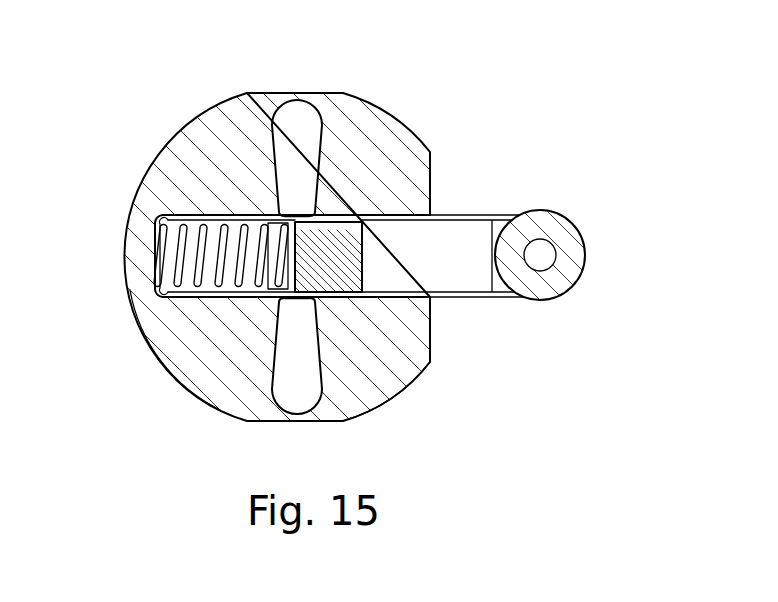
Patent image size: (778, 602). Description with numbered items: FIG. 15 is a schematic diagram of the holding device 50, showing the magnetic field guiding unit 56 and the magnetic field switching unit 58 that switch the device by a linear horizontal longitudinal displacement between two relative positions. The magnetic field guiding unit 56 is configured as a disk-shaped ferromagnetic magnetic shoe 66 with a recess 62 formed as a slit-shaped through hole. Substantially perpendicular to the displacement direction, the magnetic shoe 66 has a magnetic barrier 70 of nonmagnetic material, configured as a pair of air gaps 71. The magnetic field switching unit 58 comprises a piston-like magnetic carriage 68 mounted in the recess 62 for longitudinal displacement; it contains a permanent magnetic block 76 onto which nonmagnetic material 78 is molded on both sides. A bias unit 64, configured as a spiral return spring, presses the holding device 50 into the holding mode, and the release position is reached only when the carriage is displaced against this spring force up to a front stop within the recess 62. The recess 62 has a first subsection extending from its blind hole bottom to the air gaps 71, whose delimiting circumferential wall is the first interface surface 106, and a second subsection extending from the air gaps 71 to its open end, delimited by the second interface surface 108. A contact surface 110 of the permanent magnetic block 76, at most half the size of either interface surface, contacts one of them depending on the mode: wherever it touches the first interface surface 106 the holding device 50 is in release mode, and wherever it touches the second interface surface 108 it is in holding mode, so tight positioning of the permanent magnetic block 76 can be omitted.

The holding device 50 is at (516, 98).
The magnetic field guiding unit 56 is at (198, 141).
The magnetic field switching unit 58 is at (500, 209).
The recess 62 is at (163, 297).
The bias unit 64 is at (163, 257).
The magnetic shoe 66 is at (237, 112).
The magnetic carriage 68 is at (430, 262).
The magnetic barrier 70 is at (297, 90).
The air gaps 71 is at (305, 110).
The permanent magnetic block 76 is at (378, 383).
The nonmagnetic material 78 is at (476, 278).
The first interface surface 106 is at (190, 214).
The second interface surface 108 is at (388, 265).
The contact surface 110 is at (328, 285).